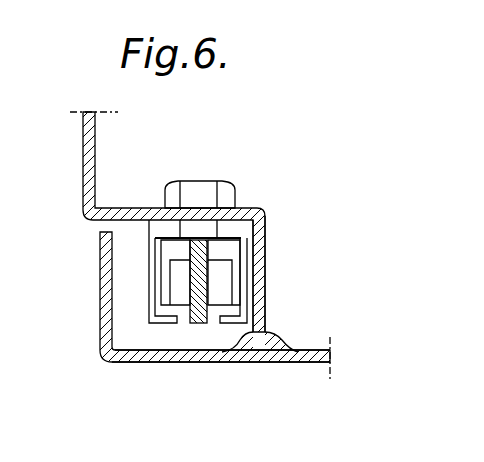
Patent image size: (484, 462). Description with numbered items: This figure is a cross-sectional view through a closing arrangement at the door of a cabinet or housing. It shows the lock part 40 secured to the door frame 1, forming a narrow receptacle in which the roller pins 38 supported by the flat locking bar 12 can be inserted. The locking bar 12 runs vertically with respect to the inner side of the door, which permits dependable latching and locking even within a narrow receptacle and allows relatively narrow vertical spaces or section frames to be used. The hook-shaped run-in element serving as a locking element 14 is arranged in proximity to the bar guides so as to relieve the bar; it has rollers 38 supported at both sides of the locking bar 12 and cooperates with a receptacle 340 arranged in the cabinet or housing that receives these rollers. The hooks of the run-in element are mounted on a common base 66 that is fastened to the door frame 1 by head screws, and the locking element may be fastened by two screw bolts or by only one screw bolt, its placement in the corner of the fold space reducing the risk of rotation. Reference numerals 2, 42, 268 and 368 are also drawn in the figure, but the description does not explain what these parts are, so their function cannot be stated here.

The door frame 1 is at (85, 142).
The base plate 2 is at (297, 362).
The locking bar 12 is at (222, 362).
The locking element 14 is at (178, 284).
The roller pin 38 is at (223, 273).
The lock part 40 is at (237, 226).
The bolt 42 is at (183, 307).
The base 66 is at (177, 232).
The nut 268 is at (171, 180).
The receptacle 340 is at (112, 337).
The U-shaped bracket 368 is at (157, 281).